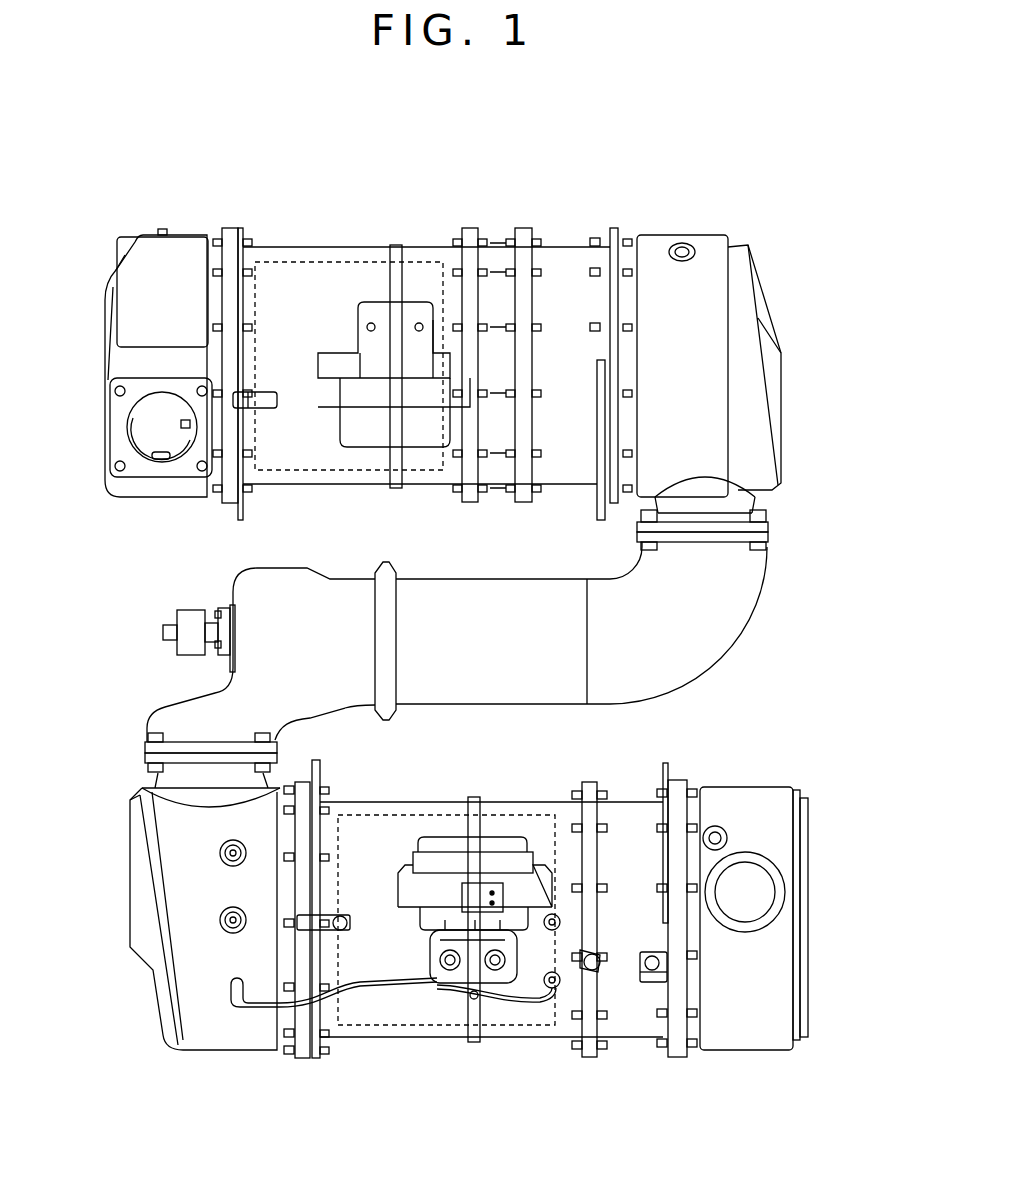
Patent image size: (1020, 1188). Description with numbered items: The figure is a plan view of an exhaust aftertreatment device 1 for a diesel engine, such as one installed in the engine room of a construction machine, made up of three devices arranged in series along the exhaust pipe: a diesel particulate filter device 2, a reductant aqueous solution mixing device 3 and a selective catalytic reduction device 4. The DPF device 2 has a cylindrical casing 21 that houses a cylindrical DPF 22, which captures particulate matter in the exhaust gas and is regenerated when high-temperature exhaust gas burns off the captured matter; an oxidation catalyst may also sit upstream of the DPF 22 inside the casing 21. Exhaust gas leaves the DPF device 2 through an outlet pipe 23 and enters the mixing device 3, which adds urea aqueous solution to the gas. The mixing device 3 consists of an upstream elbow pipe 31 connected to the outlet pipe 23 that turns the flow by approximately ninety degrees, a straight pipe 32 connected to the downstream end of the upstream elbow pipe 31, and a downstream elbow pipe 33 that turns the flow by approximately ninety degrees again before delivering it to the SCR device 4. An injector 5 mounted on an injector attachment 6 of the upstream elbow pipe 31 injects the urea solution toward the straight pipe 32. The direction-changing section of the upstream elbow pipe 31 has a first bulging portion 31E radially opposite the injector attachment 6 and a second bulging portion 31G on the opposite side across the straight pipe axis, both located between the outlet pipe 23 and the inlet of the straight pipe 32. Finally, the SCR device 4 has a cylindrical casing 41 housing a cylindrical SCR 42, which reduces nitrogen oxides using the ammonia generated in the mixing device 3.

The exhaust aftertreatment device 1 is at (545, 163).
The diesel particulate filter device 2 is at (558, 1078).
The casing 21 is at (355, 1032).
The DPF 22 is at (512, 1017).
The outlet pipe 23 is at (158, 780).
The reductant aqueous solution mixing device 3 is at (485, 562).
The upstream elbow pipe 31 is at (275, 590).
The first bulging portion 31E is at (318, 720).
The second bulging portion 31G is at (290, 578).
The straight pipe 32 is at (440, 588).
The downstream elbow pipe 33 is at (628, 577).
The selective catalytic reduction device 4 is at (413, 203).
The casing 41 is at (337, 247).
The SCR 42 is at (292, 268).
The injector 5 is at (193, 620).
The injector attachment 6 is at (228, 605).